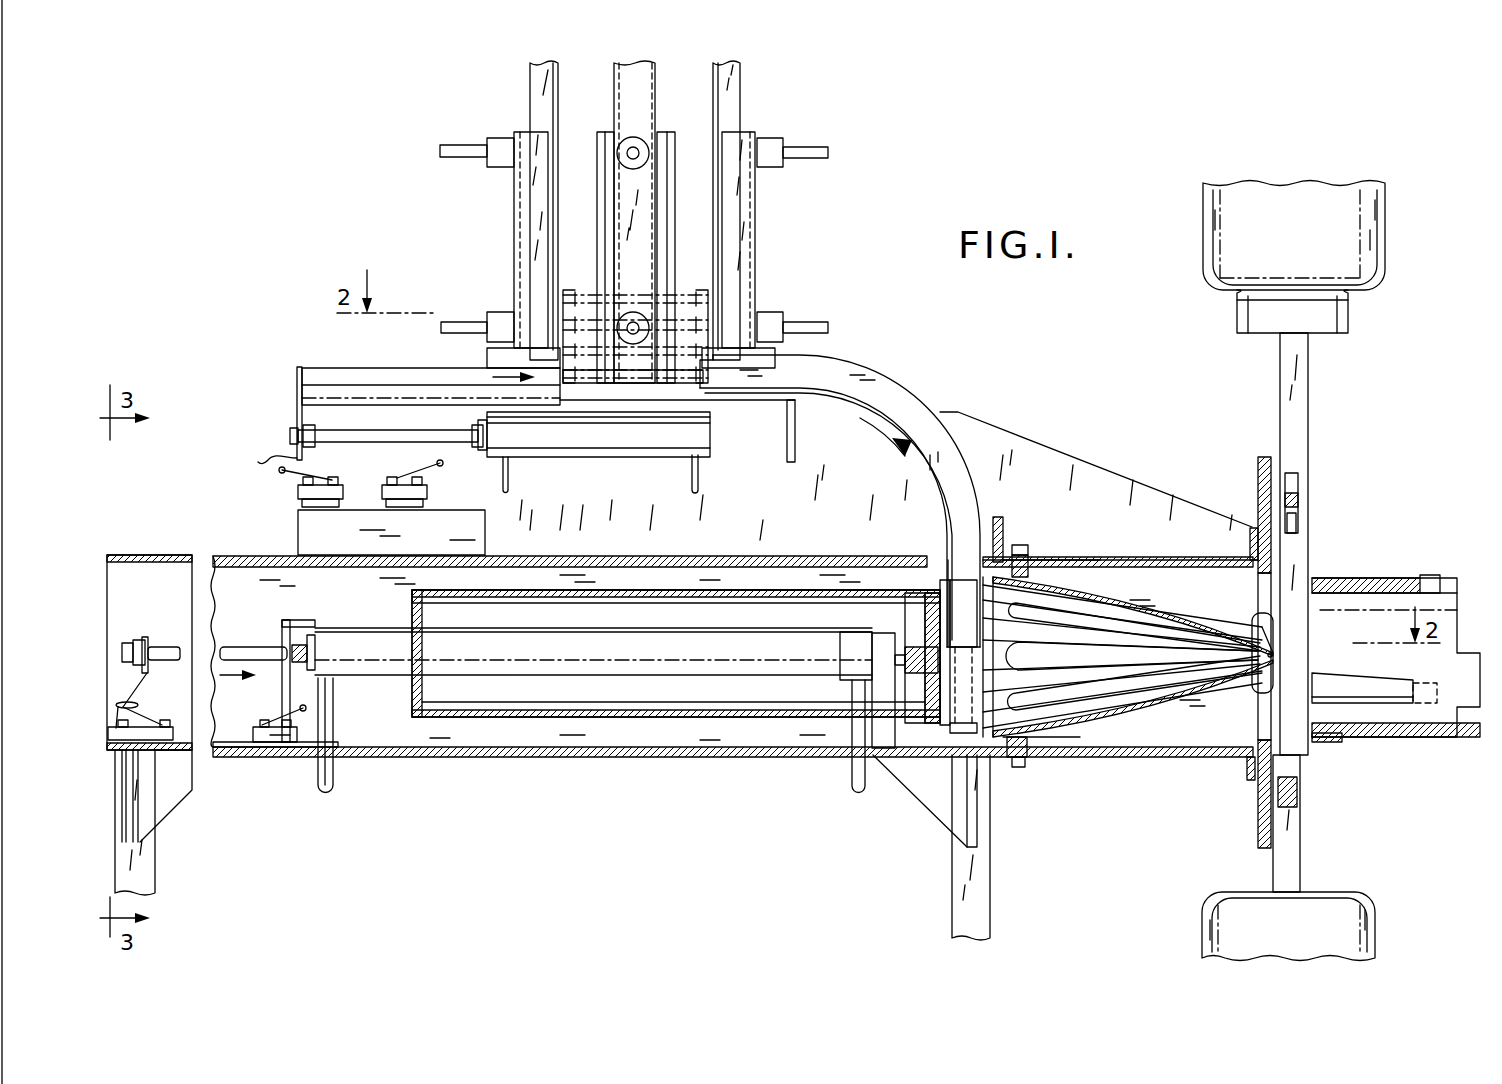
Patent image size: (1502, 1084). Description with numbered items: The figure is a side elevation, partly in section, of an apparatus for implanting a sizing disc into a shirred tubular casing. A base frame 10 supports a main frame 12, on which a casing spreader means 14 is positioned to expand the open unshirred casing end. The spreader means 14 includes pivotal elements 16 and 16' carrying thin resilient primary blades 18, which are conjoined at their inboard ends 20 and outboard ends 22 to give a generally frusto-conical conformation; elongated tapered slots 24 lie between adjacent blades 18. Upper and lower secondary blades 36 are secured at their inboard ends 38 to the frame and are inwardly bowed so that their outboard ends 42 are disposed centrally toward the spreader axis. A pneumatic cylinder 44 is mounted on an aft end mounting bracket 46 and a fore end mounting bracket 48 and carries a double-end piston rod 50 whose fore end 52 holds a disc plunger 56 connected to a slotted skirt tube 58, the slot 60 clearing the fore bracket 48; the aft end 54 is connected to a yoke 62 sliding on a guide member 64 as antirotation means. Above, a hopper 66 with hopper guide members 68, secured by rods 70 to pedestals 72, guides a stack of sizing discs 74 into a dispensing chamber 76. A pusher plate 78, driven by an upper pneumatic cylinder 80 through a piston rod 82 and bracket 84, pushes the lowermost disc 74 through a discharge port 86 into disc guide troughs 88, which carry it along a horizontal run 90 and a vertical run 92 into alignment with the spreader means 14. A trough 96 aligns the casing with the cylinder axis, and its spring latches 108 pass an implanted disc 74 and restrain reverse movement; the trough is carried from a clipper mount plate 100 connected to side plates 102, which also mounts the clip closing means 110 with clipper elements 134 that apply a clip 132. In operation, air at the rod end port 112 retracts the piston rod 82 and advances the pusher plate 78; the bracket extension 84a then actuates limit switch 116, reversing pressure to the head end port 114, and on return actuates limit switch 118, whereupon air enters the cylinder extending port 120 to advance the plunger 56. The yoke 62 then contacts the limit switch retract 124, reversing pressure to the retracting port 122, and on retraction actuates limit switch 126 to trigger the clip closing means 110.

The base frame 10 is at (935, 885).
The main frame 12 is at (628, 768).
The casing spreader means 14 is at (1142, 572).
The pivotal element 16 is at (1053, 762).
The pivotal element 16' is at (1053, 542).
The primary blades 18 is at (1066, 633).
The inboard ends 20 is at (955, 757).
The outboard ends 22 is at (1272, 656).
The tapered apertures or slots 24 is at (1020, 655).
The secondary blades 36 is at (1207, 603).
The inboard ends of secondary blades 38 is at (1015, 767).
The outboard ends of secondary blades 42 is at (1268, 642).
The pneumatic cylinder 44 is at (625, 678).
The aft end mounting bracket 46 is at (298, 620).
The fore end mounting bracket 48 is at (883, 737).
The double-end piston rod 50 is at (252, 635).
The fore end of piston rod 52 is at (878, 655).
The aft end of piston rod 54 is at (152, 640).
The disc plunger 56 is at (913, 585).
The slotted skirt tube 58 is at (753, 572).
The slot 60 is at (725, 720).
The yoke 62 is at (137, 690).
The guide member 64 is at (238, 745).
The hopper 66 is at (515, 94).
The hopper guide members 68 is at (646, 93).
The rods 70 is at (440, 150).
The pedestals 72 is at (525, 236).
The sizing discs 74 is at (688, 285).
The dispensing chamber 76 is at (581, 280).
The pusher plate 78 is at (392, 368).
The upper pneumatic cylinder 80 is at (600, 448).
The piston rod 82 is at (357, 440).
The bracket 84 is at (297, 390).
The bracket extension 84a is at (268, 460).
The discharge port 86 is at (682, 380).
The disc guide troughs 88 is at (933, 443).
The horizontal run 90 is at (748, 377).
The vertical run 92 is at (960, 528).
The trough 96 is at (1435, 717).
The clipper mount plate 100 is at (1258, 485).
The side plates 102 is at (1250, 543).
The spring latches 108 is at (1408, 577).
The clip closing means 110 is at (1325, 422).
The rod end port 112 is at (520, 490).
The head end port 114 is at (692, 488).
The limit switch 116 is at (442, 466).
The limit switch 118 is at (282, 470).
The cylinder extending port 120 is at (333, 780).
The retracting port 122 is at (855, 780).
The limit switch retract 124 is at (278, 722).
The limit switch 126 is at (158, 740).
The clip 132 is at (1296, 522).
The clipper elements 134 is at (1298, 485).